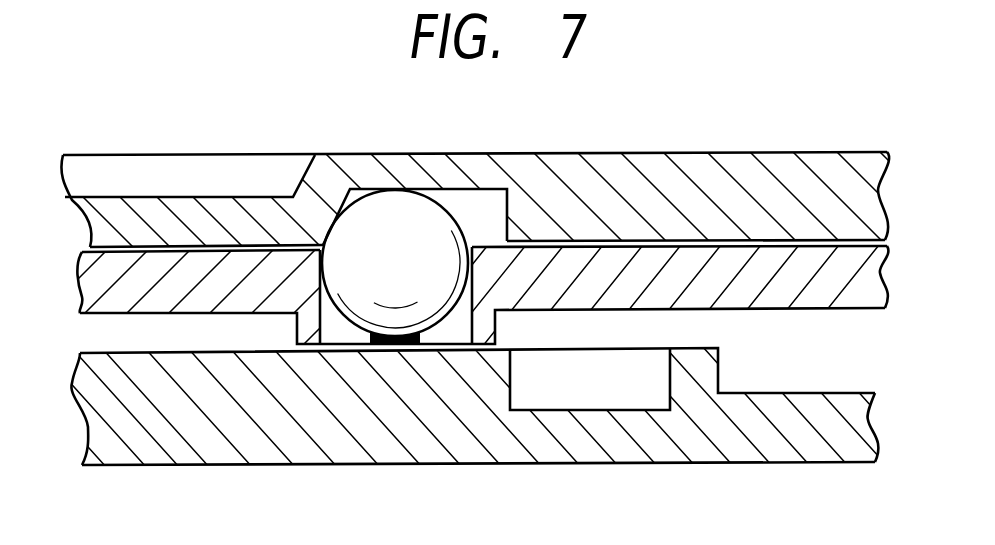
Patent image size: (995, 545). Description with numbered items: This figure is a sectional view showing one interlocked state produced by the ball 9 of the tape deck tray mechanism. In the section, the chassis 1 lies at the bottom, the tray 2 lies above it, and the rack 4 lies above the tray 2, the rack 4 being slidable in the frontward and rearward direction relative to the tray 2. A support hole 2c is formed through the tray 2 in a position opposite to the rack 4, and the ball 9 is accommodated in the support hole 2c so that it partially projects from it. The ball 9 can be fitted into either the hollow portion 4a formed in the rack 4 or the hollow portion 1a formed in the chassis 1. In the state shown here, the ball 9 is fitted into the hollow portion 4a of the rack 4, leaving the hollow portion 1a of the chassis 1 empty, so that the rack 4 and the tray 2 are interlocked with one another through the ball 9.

The chassis 1 is at (747, 438).
The hollow portion 1a is at (610, 382).
The tray 2 is at (85, 313).
The support hole 2c is at (338, 328).
The rack 4 is at (600, 173).
The hollow portion 4a is at (479, 205).
The ball 9 is at (386, 220).